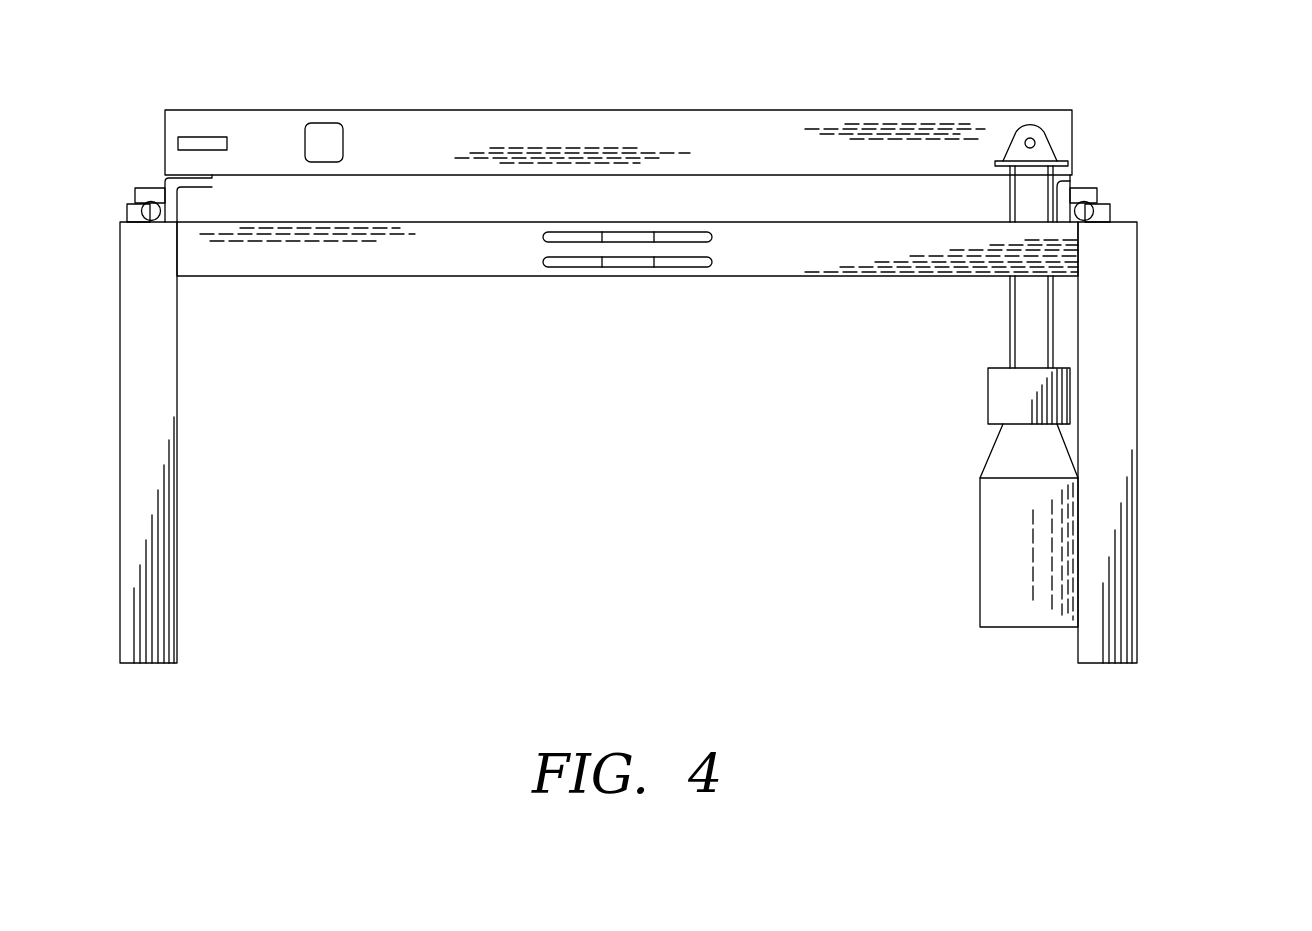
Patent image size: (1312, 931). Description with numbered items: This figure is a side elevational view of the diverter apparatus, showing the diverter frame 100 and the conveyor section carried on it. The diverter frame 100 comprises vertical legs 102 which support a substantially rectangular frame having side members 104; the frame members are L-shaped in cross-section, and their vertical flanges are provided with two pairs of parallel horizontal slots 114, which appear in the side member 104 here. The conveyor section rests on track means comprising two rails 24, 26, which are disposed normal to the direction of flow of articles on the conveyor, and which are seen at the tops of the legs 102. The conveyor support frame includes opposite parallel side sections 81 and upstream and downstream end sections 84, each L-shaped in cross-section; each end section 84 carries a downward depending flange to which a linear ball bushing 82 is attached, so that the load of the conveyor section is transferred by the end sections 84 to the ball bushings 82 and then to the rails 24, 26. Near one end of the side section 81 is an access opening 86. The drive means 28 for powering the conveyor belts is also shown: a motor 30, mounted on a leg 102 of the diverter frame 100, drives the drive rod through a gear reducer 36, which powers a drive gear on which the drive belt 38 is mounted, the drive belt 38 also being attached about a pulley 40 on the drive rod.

The rail 24 is at (125, 210).
The rail 26 is at (1110, 210).
The drive means 28 is at (950, 525).
The motor 30 is at (980, 577).
The gear reducer 36 is at (988, 388).
The drive belt 38 is at (1008, 313).
The pulley 40 is at (1042, 125).
The side section 81 is at (480, 110).
The linear ball bushing 82 is at (137, 196).
The end section 84 is at (163, 180).
The access opening 86 is at (323, 123).
The diverter frame 100 is at (649, 352).
The vertical leg 102 is at (1137, 392).
The side member 104 is at (298, 277).
The horizontal slots 114 is at (543, 237).